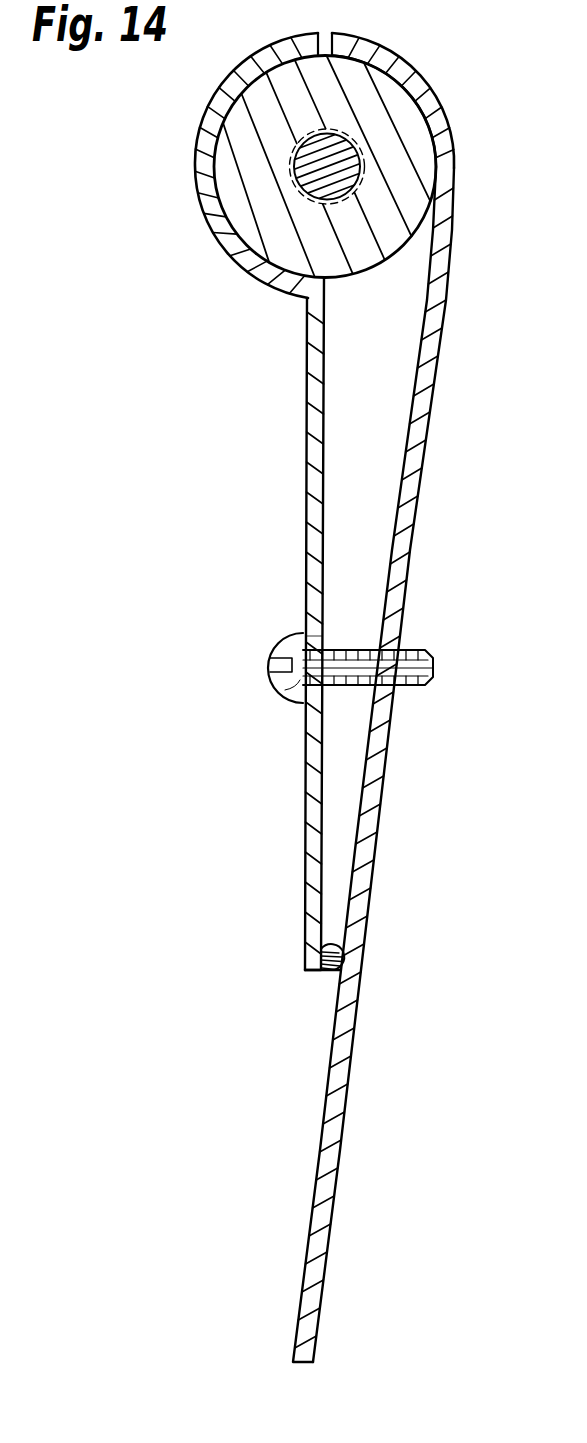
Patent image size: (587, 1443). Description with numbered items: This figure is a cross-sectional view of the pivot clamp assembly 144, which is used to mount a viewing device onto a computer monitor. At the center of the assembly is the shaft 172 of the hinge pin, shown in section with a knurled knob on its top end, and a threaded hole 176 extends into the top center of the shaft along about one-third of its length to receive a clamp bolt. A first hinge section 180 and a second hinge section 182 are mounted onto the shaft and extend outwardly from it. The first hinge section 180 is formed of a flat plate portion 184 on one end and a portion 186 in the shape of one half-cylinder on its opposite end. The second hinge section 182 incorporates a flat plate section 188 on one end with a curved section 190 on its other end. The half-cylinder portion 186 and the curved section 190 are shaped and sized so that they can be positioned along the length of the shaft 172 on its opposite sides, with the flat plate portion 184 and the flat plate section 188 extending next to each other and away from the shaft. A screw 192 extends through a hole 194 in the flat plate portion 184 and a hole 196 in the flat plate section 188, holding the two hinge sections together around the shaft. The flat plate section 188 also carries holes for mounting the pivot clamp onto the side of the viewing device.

The pivot clamp assembly 144 is at (106, 337).
The shaft 172 is at (410, 122).
The threaded hole 176 is at (345, 175).
The first hinge section 180 is at (298, 458).
The second hinge section 182 is at (437, 490).
The flat plate portion 184 is at (306, 560).
The half-cylinder portion 186 is at (212, 240).
The flat plate section 188 is at (412, 561).
The curved section 190 is at (416, 62).
The screw 192 is at (270, 674).
The hole 194 is at (313, 636).
The hole 196 is at (393, 645).